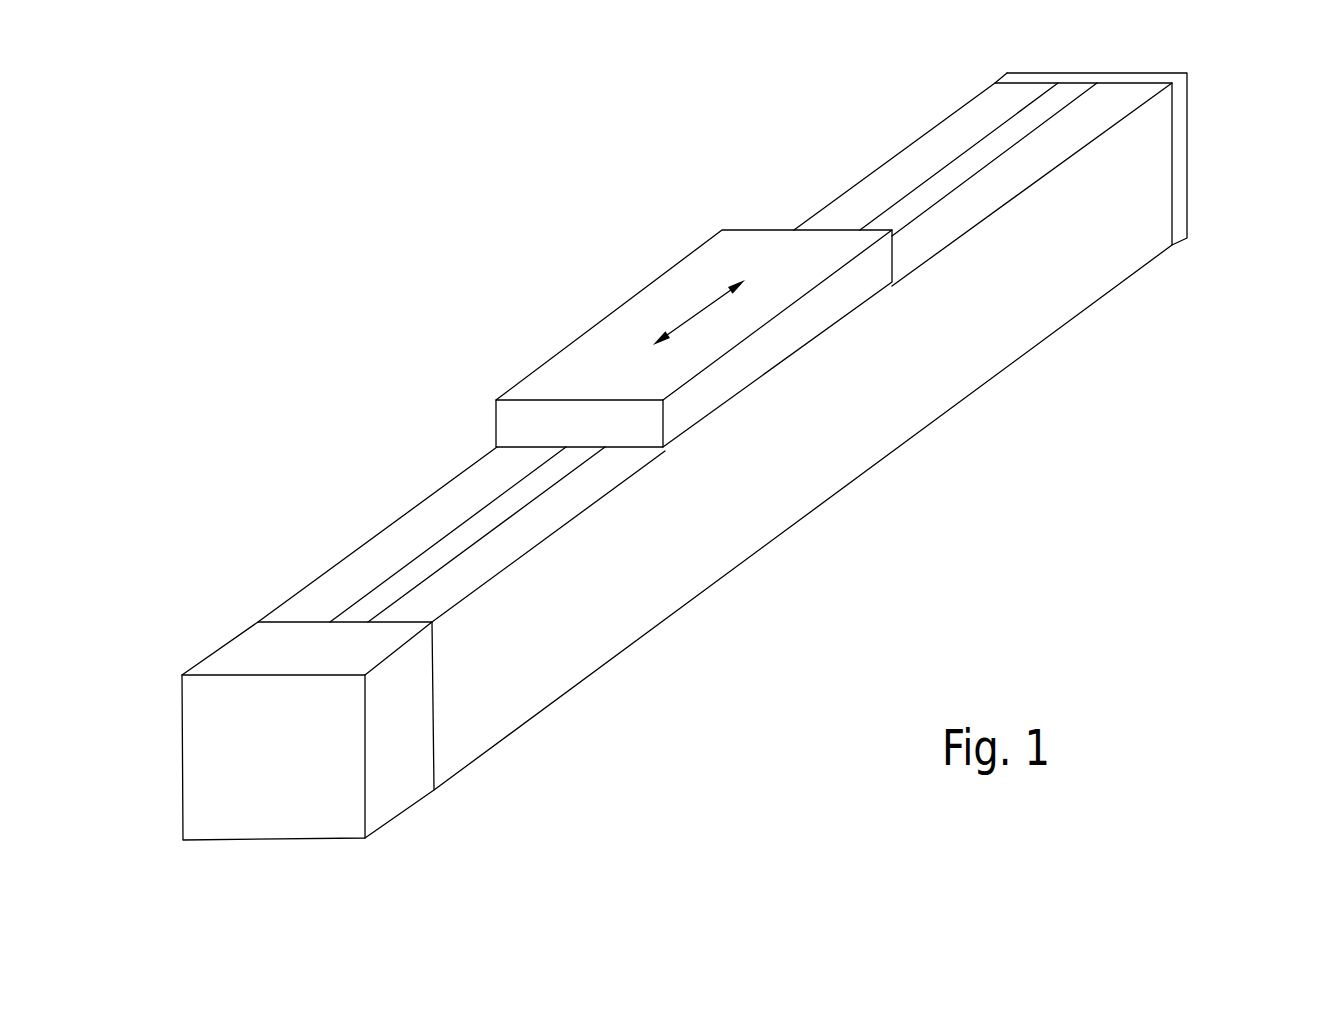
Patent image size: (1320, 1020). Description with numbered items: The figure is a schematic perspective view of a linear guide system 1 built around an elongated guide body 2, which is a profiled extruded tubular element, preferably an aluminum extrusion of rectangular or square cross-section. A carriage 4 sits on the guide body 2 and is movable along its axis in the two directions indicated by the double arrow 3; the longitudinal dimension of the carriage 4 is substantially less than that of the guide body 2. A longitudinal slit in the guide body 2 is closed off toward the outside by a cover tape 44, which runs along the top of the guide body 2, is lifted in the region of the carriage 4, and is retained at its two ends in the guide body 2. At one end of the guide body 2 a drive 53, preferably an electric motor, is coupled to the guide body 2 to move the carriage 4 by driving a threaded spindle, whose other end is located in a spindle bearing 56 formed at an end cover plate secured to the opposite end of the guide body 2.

The linear guide system 1 is at (801, 124).
The guide body 2 is at (715, 431).
The double arrow 3 is at (694, 307).
The carriage 4 is at (815, 273).
The cover tape 44 is at (438, 557).
The drive 53 is at (398, 778).
The spindle bearing 56 is at (1180, 125).